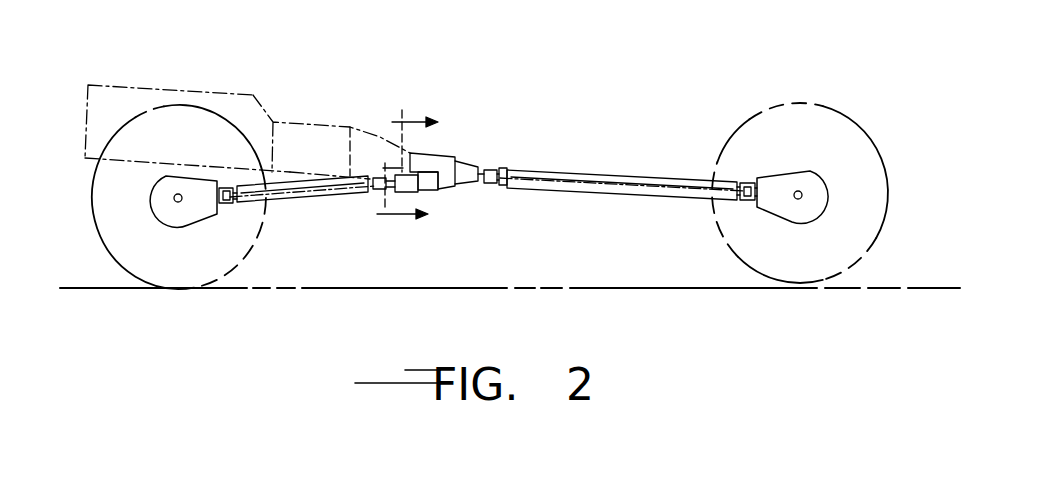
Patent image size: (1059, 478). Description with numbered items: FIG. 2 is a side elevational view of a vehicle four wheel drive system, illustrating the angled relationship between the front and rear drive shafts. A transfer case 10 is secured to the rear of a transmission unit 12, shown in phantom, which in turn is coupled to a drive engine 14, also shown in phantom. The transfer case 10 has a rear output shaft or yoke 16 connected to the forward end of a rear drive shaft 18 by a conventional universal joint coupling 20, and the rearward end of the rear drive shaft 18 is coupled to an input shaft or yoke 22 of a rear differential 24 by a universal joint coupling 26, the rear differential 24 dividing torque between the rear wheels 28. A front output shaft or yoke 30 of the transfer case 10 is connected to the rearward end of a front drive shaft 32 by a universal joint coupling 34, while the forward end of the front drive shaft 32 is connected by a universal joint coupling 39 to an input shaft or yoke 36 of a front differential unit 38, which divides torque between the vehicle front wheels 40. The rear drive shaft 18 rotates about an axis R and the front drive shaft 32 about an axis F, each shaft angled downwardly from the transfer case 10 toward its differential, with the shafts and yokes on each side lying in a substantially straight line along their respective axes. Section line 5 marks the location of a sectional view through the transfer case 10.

The transfer case 10 is at (451, 153).
The transmission unit 12 is at (338, 124).
The drive engine 14 is at (237, 92).
The rear output shaft or yoke 16 is at (502, 187).
The rear drive shaft 18 is at (590, 172).
The universal joint coupling 20 is at (500, 170).
The input shaft or yoke 22 is at (743, 200).
The rear differential 24 is at (790, 207).
The universal joint coupling 26 is at (743, 182).
The rear wheels 28 is at (842, 107).
The front output shaft or yoke 30 is at (378, 192).
The front drive shaft 32 is at (300, 198).
The universal joint coupling 34 is at (378, 178).
The input shaft or yoke 36 is at (225, 187).
The front differential unit 38 is at (155, 198).
The universal joint coupling 39 is at (232, 207).
The vehicle front wheels 40 is at (132, 120).
The front axis F is at (337, 192).
The rear axis R is at (633, 187).
The section line 5- 5 is at (418, 169).